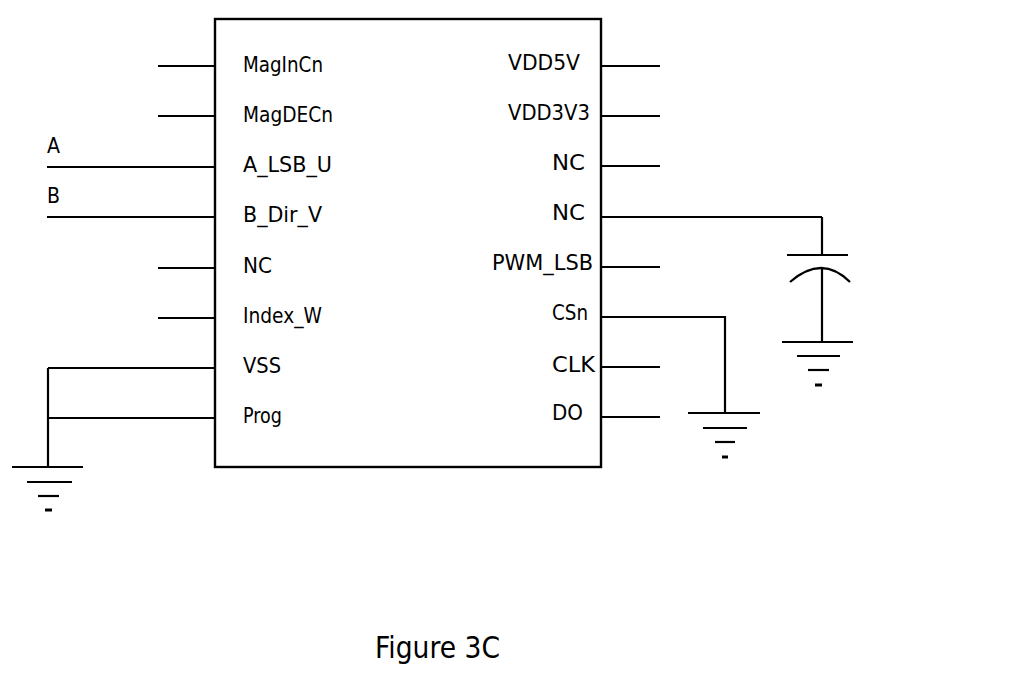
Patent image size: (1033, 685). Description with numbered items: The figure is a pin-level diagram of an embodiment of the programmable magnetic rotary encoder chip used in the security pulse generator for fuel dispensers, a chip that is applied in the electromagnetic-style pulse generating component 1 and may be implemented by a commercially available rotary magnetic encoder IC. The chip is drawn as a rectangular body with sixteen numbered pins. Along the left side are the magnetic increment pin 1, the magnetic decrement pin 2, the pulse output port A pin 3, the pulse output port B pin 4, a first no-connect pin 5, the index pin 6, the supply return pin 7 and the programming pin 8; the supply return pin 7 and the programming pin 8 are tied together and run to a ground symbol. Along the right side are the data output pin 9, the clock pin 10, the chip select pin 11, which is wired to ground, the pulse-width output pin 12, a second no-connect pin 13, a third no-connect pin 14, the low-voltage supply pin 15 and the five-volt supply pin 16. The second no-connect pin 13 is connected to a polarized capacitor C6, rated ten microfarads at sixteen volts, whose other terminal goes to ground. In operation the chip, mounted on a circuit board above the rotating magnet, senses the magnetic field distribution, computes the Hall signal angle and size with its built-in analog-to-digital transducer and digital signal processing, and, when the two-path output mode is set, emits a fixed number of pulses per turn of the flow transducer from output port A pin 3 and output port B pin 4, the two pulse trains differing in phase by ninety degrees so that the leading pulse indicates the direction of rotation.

The pulse generating component 1 is at (186, 46).
The pin 2 MagDECn 2 is at (186, 99).
The pin 3 A_LSB_U (input A) 3 is at (131, 149).
The pin 4 B_Dir_V (input B) 4 is at (131, 199).
The pin 5 NC 5 is at (186, 250).
The pin 6 Index_W 6 is at (186, 300).
The pin 7 VSS 7 is at (131, 350).
The pin 8 Prog 8 is at (131, 400).
The pin 9 DO 9 is at (630, 398).
The pin 10 CLK 10 is at (630, 349).
The pin 11 CSn 11 is at (663, 347).
The pin 12 PWM_LSB 12 is at (630, 249).
The pin 13 NC 13 is at (711, 198).
The pin 14 NC 14 is at (630, 147).
The pin 15 VDD3V3 15 is at (630, 97).
The pin 16 VDD5V 16 is at (630, 47).
The capacitor C6 10uF/16V C6 is at (835, 279).